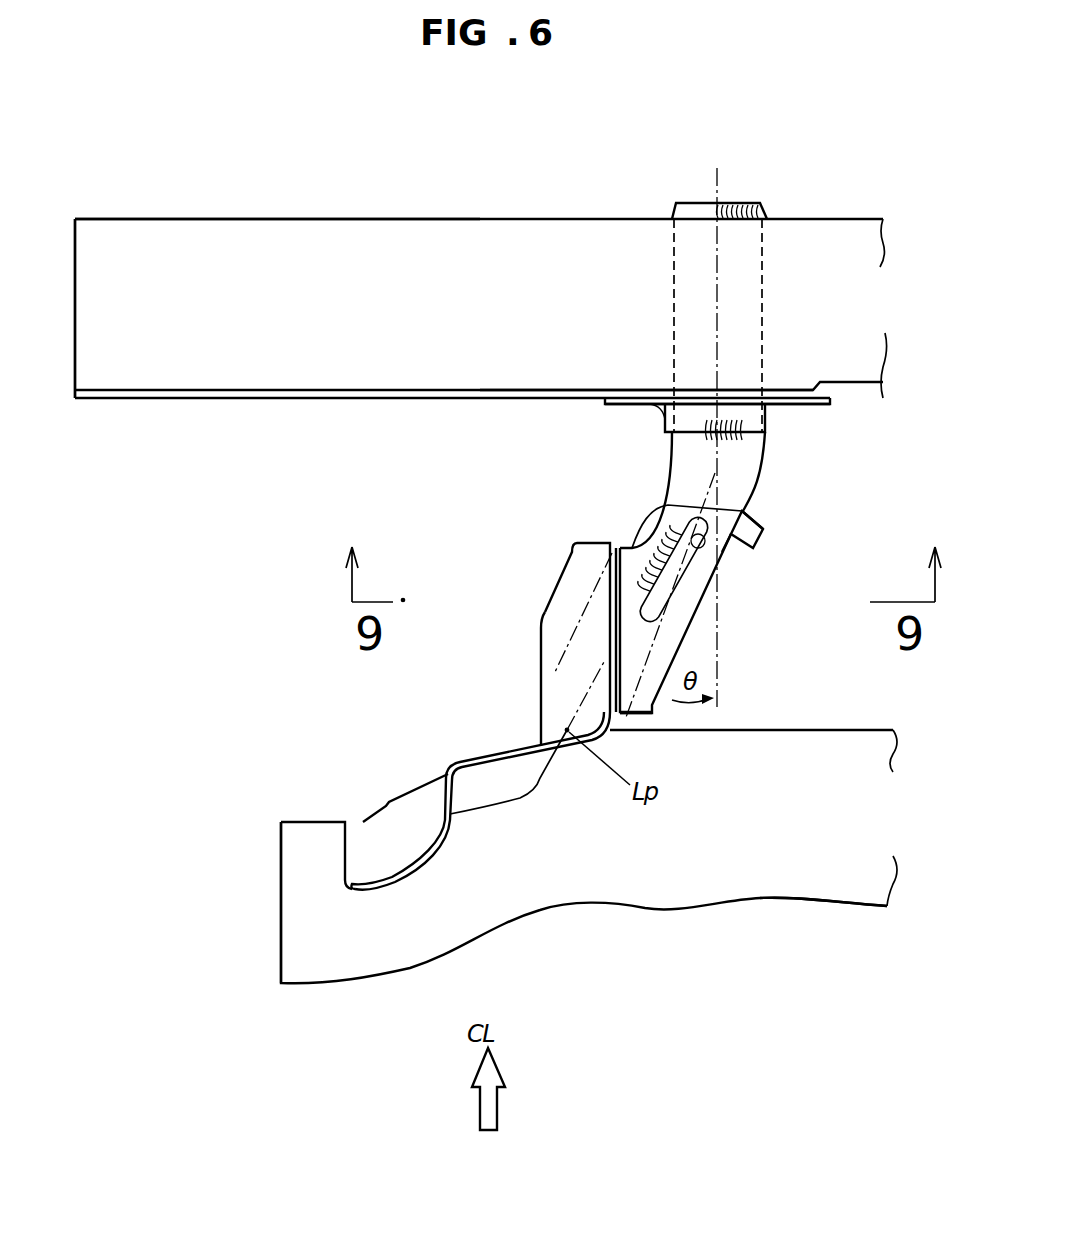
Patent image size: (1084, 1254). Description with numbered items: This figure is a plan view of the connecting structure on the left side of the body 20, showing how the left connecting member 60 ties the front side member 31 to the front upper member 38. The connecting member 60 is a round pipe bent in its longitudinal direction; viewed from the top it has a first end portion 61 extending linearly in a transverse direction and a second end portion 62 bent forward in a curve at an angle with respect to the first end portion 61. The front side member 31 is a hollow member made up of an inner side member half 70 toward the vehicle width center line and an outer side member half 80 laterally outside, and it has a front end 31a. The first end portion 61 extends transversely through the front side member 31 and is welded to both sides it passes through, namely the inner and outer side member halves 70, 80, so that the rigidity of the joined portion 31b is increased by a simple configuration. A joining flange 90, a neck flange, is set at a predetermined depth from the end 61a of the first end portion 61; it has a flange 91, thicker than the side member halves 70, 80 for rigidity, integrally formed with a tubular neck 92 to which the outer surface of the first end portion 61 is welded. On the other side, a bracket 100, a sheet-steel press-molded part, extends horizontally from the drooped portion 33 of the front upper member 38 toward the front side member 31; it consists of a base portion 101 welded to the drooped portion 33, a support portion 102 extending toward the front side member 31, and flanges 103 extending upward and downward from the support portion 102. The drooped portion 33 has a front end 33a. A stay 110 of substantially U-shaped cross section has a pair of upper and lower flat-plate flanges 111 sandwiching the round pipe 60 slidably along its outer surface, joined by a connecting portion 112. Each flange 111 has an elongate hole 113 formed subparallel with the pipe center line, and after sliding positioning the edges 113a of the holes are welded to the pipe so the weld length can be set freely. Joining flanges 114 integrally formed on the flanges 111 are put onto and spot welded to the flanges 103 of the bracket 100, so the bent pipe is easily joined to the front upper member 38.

The body 20 is at (170, 104).
The front side member 31 is at (383, 122).
The inner side member half 70 is at (243, 245).
The outer side member half 80 is at (353, 390).
The front end of front side member 31a is at (75, 334).
The joined portion of front side member 31b is at (790, 298).
The first end portion 61 is at (672, 252).
The end of first end portion 61a is at (697, 203).
The joining flange 90 is at (536, 414).
The flange 91 is at (690, 422).
The neck 92 is at (663, 425).
The connecting member 60 is at (766, 466).
The stay 110 is at (758, 517).
The flange 111 is at (757, 548).
The connecting portion 112 is at (722, 590).
The elongate hole 113 is at (652, 603).
The edge of elongate hole 113a is at (660, 540).
The joining flange 114 is at (624, 655).
The second end portion 62 is at (597, 600).
The bracket 100 is at (478, 751).
The base portion 101 is at (382, 832).
The support portion 102 is at (560, 700).
The flange 103 is at (610, 630).
The drooped portion 33 is at (765, 877).
The front end of drooped portion 33a is at (281, 905).
The front upper member 38 is at (852, 902).